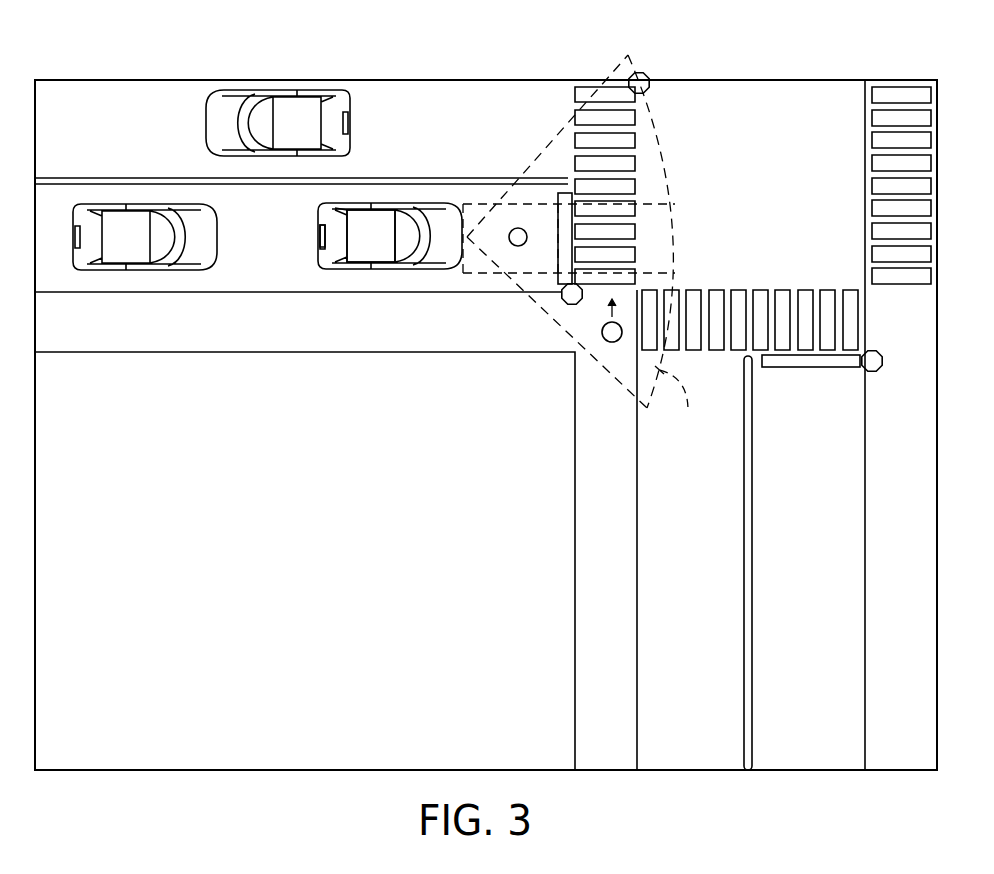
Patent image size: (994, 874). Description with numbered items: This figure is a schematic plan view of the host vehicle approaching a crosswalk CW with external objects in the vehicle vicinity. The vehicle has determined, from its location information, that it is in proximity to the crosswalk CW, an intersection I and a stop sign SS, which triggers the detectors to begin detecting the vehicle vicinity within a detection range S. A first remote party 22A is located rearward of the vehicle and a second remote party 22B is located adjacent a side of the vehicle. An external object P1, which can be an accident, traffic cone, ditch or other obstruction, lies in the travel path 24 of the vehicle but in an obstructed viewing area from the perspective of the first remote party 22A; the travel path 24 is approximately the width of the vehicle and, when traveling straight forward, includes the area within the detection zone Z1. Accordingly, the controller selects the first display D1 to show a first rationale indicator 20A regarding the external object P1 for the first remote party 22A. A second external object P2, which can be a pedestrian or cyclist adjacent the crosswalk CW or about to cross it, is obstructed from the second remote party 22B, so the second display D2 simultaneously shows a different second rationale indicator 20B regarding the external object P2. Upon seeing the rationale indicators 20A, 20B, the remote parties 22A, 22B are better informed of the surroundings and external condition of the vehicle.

The first rationale indicator 20A is at (319, 231).
The second rationale indicator 20B is at (348, 212).
The first remote party 22A is at (110, 250).
The second remote party 22B is at (278, 137).
The travel path 24 is at (623, 279).
The first display D1 is at (327, 248).
The second display D2 is at (346, 211).
The external object P1 is at (516, 228).
The external object P2 is at (608, 343).
The sensor detection area S is at (550, 158).
The stop sign SS is at (639, 78).
The crosswalk CW is at (636, 162).
The intersection I is at (779, 150).
The detection zone Z1 is at (680, 404).